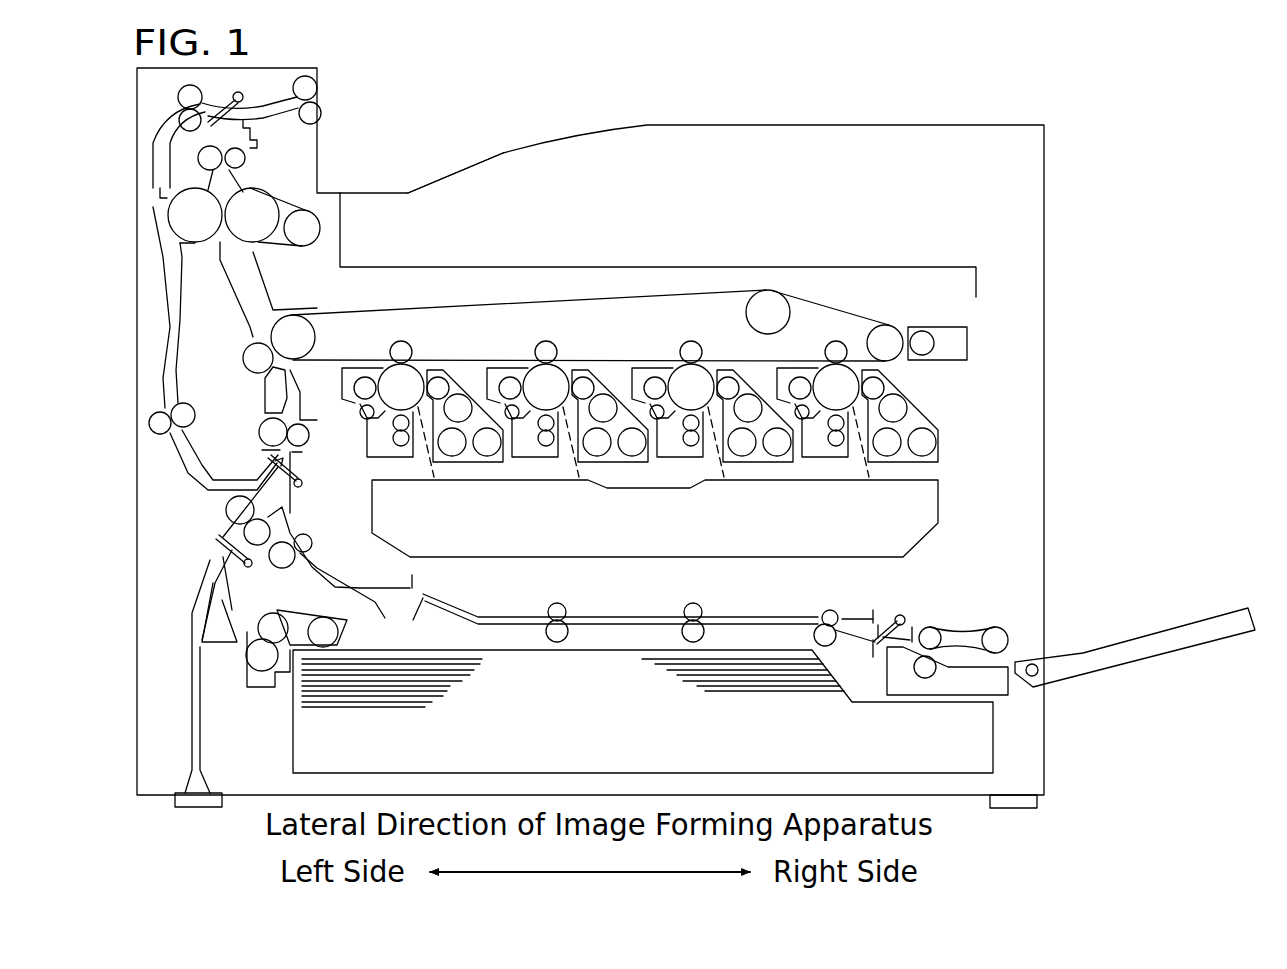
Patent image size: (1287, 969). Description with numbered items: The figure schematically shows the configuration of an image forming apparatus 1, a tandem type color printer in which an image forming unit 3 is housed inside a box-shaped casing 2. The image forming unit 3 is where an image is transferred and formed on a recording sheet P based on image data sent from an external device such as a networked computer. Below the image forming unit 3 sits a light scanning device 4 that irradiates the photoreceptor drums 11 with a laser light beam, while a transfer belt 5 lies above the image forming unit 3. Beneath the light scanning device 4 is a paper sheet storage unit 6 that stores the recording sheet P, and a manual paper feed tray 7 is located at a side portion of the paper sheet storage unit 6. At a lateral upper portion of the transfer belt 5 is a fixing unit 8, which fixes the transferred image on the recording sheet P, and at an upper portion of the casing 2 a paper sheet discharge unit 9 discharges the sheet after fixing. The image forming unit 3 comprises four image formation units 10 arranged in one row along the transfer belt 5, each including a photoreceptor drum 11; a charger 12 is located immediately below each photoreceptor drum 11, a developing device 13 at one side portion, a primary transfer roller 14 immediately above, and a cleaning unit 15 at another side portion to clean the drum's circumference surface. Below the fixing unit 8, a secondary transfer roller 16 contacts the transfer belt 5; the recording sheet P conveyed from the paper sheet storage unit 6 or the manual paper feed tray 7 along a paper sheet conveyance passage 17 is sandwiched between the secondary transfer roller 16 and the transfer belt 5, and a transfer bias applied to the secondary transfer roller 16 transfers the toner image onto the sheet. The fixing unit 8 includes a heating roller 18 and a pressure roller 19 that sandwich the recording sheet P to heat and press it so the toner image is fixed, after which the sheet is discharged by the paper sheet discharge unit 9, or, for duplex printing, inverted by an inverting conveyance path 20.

The image forming apparatus 1 is at (655, 91).
The casing 2 is at (967, 126).
The image forming unit 3 is at (950, 400).
The light scanning device 4 is at (677, 557).
The transfer belt 5 is at (605, 290).
The paper sheet storage unit 6 is at (293, 752).
The manual paper feed tray 7 is at (1180, 628).
The fixing unit 8 is at (207, 206).
The paper sheet discharge unit 9 is at (503, 153).
The image formation unit 10 is at (422, 350).
The photoreceptor drum 11 is at (363, 410).
The charger 12 is at (401, 449).
The developing device 13 is at (455, 467).
The primary transfer roller 14 is at (398, 341).
The cleaning unit 15 is at (362, 366).
The secondary transfer roller 16 is at (247, 355).
The paper sheet conveyance passage 17 is at (208, 543).
The heating roller 18 is at (274, 198).
The pressure roller 19 is at (168, 224).
The inverting conveyance path 20 is at (164, 340).
The recording sheet P is at (760, 677).